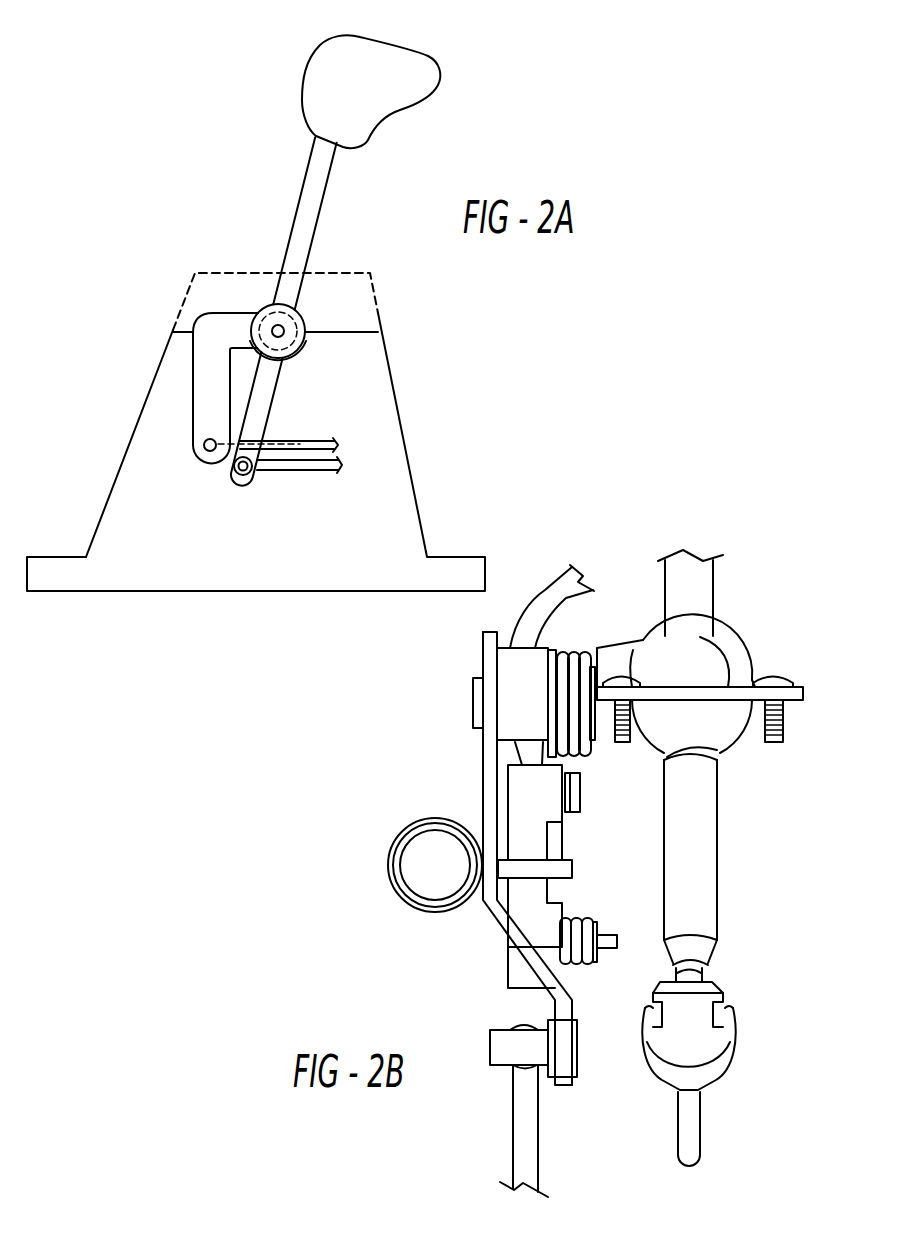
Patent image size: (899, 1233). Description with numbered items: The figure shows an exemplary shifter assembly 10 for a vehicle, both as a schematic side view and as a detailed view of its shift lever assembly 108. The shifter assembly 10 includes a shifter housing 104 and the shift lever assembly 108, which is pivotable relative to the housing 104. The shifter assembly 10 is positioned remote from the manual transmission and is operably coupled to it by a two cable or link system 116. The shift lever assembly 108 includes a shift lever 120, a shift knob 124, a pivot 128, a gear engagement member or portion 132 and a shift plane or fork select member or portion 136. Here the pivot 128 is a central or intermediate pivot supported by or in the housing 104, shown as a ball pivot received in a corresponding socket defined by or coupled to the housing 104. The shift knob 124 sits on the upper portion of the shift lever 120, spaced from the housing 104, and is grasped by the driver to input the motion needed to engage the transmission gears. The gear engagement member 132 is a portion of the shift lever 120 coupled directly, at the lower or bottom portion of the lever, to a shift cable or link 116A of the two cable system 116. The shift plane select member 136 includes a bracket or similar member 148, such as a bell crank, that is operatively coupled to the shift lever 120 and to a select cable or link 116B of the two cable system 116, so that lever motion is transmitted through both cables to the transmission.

In FIG. 2A, the shifter assembly 10 is at (520, 146).
In FIG. 2A, the shifter housing 104 is at (408, 362).
In FIG. 2A, the shift lever assembly 108 is at (292, 207).
In FIG. 2B, the shift lever assembly 108 is at (747, 613).
In FIG. 2A, the two cable or link system 116 is at (378, 473).
In FIG. 2A, the shift cable or link 116A is at (343, 474).
In FIG. 2B, the shift cable or link 116A is at (700, 1122).
In FIG. 2A, the select cable or link 116B is at (318, 440).
In FIG. 2B, the select cable or link 116B is at (514, 1134).
In FIG. 2A, the shift lever 120 is at (333, 193).
In FIG. 2B, the shift lever 120 is at (716, 855).
In FIG. 2A, the shift knob 124 is at (432, 52).
In FIG. 2A, the pivot 128 is at (303, 321).
In FIG. 2B, the pivot 128 is at (735, 667).
In FIG. 2A, the gear engagement member or portion 132 is at (233, 491).
In FIG. 2B, the gear engagement member or portion 132 is at (730, 977).
In FIG. 2A, the shift plane or fork select member or portion 136 is at (186, 377).
In FIG. 2B, the shift plane or fork select member or portion 136 is at (583, 1093).
In FIG. 2A, the bracket or member 148 is at (192, 410).
In FIG. 2B, the bracket or member 148 is at (483, 922).